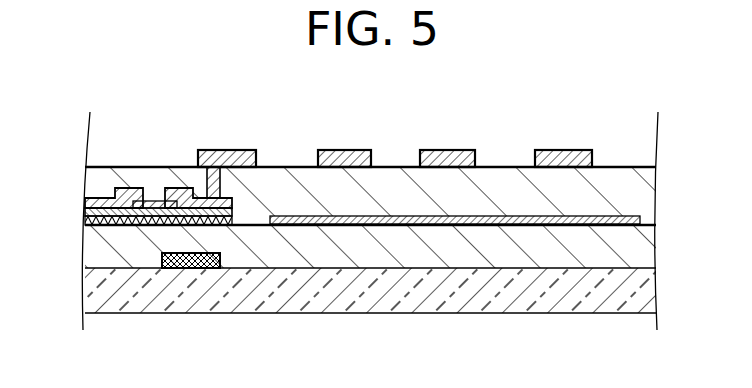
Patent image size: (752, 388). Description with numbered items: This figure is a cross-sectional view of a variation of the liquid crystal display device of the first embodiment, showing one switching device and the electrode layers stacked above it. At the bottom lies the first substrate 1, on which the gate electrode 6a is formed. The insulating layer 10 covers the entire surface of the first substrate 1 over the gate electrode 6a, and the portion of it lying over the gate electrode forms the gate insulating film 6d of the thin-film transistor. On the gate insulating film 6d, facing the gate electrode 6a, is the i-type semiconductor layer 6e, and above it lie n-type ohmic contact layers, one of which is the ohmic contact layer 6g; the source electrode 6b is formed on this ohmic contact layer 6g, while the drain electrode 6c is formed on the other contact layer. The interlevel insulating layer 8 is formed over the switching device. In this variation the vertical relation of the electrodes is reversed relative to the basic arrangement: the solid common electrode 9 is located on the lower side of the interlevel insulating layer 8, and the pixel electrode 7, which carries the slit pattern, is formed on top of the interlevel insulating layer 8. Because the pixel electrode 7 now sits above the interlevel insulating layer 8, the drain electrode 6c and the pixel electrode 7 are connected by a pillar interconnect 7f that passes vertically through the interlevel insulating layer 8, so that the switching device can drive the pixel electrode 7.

The first substrate 1 is at (637, 293).
The gate electrode 6a is at (190, 268).
The source electrode 6b is at (97, 196).
The drain electrode 6c is at (172, 188).
The gate insulating film 6d is at (100, 260).
The i-type semiconductor layer 6e is at (97, 222).
The ohmic contact layer 6g is at (100, 212).
The pixel electrode 7 is at (227, 158).
The pillar interconnect 7f is at (212, 185).
The interlevel insulating layer 8 is at (638, 197).
The common electrode 9 is at (632, 221).
The insulating layer 10 is at (637, 257).